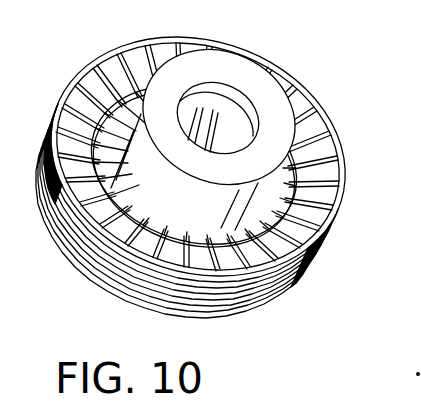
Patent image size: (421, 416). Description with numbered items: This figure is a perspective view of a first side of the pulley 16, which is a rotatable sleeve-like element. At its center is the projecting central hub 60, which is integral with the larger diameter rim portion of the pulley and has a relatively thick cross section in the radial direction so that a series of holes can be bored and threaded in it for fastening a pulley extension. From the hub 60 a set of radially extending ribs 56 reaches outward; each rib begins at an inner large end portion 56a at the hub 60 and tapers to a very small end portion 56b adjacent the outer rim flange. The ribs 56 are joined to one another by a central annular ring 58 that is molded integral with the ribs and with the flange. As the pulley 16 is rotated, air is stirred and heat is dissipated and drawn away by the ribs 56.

The pulley 16 is at (207, 160).
The radially extending ribs 56 is at (171, 160).
The inner large end portions 56a is at (100, 192).
The very small end portions 56b is at (77, 181).
The central annular ring 58 is at (97, 72).
The projecting central hub 60 is at (233, 73).